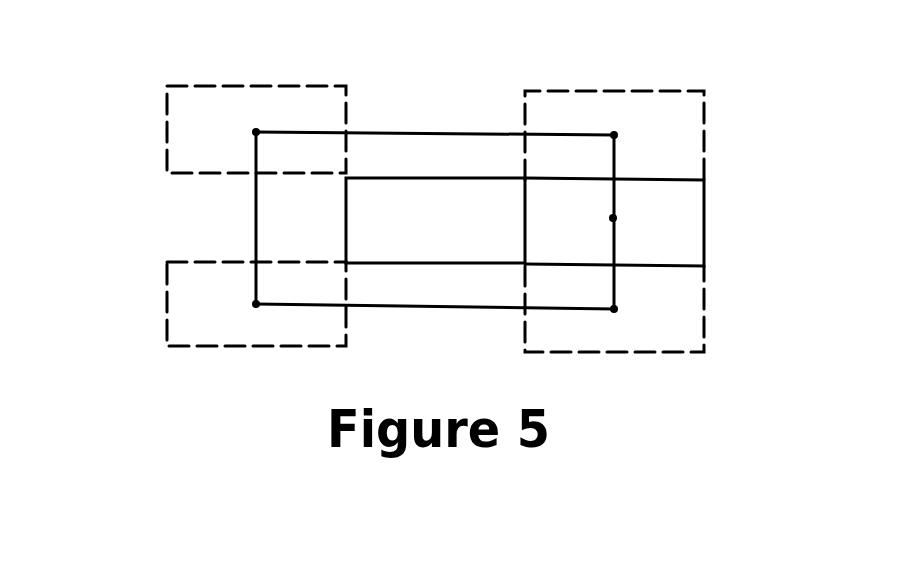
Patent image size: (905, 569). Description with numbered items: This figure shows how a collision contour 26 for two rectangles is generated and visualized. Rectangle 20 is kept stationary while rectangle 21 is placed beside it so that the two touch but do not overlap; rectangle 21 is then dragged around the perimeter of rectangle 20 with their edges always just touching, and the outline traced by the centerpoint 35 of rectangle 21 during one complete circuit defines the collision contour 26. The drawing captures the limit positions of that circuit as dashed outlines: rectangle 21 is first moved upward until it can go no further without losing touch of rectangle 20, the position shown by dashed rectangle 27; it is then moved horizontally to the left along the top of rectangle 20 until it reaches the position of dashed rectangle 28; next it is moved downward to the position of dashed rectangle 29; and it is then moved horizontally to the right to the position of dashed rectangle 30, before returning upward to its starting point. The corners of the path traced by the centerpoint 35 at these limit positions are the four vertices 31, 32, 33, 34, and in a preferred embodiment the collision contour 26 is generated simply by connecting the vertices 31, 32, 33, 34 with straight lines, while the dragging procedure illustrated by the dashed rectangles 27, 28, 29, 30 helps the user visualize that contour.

The rectangle 20 is at (455, 235).
The rectangle 21 is at (643, 236).
The collision contour 26 is at (427, 133).
The dashed rectangle 27 is at (680, 92).
The dashed rectangle 28 is at (210, 85).
The dashed rectangle 29 is at (238, 348).
The dashed rectangle 30 is at (677, 353).
The vertex 31 is at (614, 135).
The vertex 32 is at (256, 132).
The vertex 33 is at (256, 304).
The vertex 34 is at (614, 309).
The centerpoint 35 is at (613, 218).